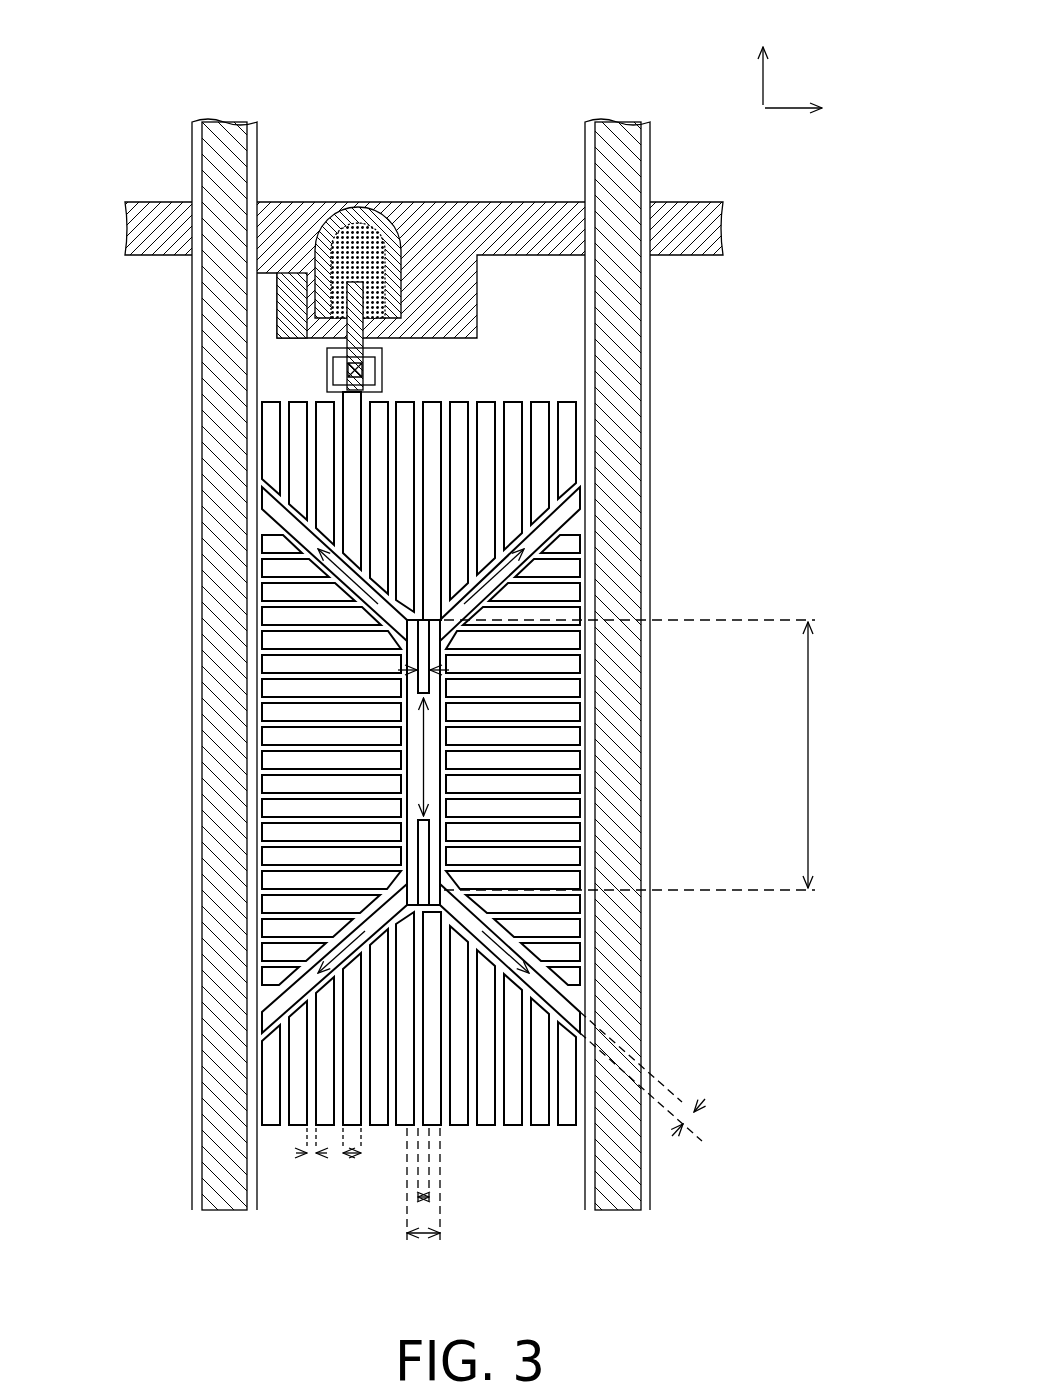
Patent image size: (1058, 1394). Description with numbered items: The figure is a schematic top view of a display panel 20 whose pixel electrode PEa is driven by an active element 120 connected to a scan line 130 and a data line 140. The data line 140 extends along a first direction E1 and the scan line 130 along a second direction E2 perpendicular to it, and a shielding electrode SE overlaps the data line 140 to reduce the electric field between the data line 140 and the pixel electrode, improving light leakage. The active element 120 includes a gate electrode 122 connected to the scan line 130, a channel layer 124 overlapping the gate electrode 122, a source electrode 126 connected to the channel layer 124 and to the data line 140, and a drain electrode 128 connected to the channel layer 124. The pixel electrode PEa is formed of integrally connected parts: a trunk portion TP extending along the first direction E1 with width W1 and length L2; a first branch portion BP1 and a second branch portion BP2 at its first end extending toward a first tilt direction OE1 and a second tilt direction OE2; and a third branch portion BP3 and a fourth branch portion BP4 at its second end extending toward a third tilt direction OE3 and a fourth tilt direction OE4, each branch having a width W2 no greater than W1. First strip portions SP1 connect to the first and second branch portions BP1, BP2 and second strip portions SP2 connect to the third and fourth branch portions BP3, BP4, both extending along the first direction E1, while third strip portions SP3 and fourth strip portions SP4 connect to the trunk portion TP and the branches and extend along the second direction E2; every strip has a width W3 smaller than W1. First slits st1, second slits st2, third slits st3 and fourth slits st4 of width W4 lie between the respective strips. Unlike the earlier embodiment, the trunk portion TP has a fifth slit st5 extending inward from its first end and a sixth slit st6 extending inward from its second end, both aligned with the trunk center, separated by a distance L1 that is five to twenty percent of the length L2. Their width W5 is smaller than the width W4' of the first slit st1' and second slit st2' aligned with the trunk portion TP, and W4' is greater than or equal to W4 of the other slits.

The display panel 20 is at (125, 172).
The active element 120 is at (225, 320).
The gate electrode 122 is at (288, 290).
The channel layer 124 is at (333, 297).
The source electrode 126 is at (392, 308).
The drain electrode 128 is at (333, 374).
The scan line 130 is at (483, 205).
The data line 140 is at (224, 136).
The shielding electrode SE is at (651, 301).
The trunk portion TP is at (431, 735).
The first branch portion BP1 is at (372, 611).
The second branch portion BP2 is at (557, 515).
The third branch portion BP3 is at (278, 1004).
The fourth branch portion BP4 is at (570, 1001).
The first strip portions SP1 is at (577, 449).
The second strip portions SP2 is at (270, 1110).
The third strip portions SP3 is at (272, 832).
The fourth strip portions SP4 is at (570, 832).
The first tilt direction OE1 is at (352, 579).
The second tilt direction OE2 is at (500, 574).
The third tilt direction OE3 is at (330, 950).
The fourth tilt direction OE4 is at (515, 952).
The first slits st1 is at (595, 387).
The first slit aligned with the trunk portion st1' is at (570, 362).
The second slits st2 is at (528, 1171).
The second slit aligned with the trunk portion st2' is at (463, 1156).
The third slits st3 is at (259, 795).
The fourth slits st4 is at (583, 795).
The fifth slit st5 is at (422, 616).
The sixth slit st6 is at (421, 910).
The width of the trunk portion W1 is at (423, 1203).
The width of the branch portions W2 is at (652, 1091).
The width of the strip portions W3 is at (352, 1161).
The width of the slits W4 is at (312, 1161).
The width of the slit aligned with the trunk portion W4' is at (456, 1180).
The width of the fifth and sixth slits W5 is at (414, 676).
The distance between the fifth slit and the sixth slit L1 is at (431, 757).
The length of the trunk portion L2 is at (644, 755).
The first direction E1 is at (765, 56).
The second direction E2 is at (814, 110).
The pixel electrode PEa is at (845, 998).